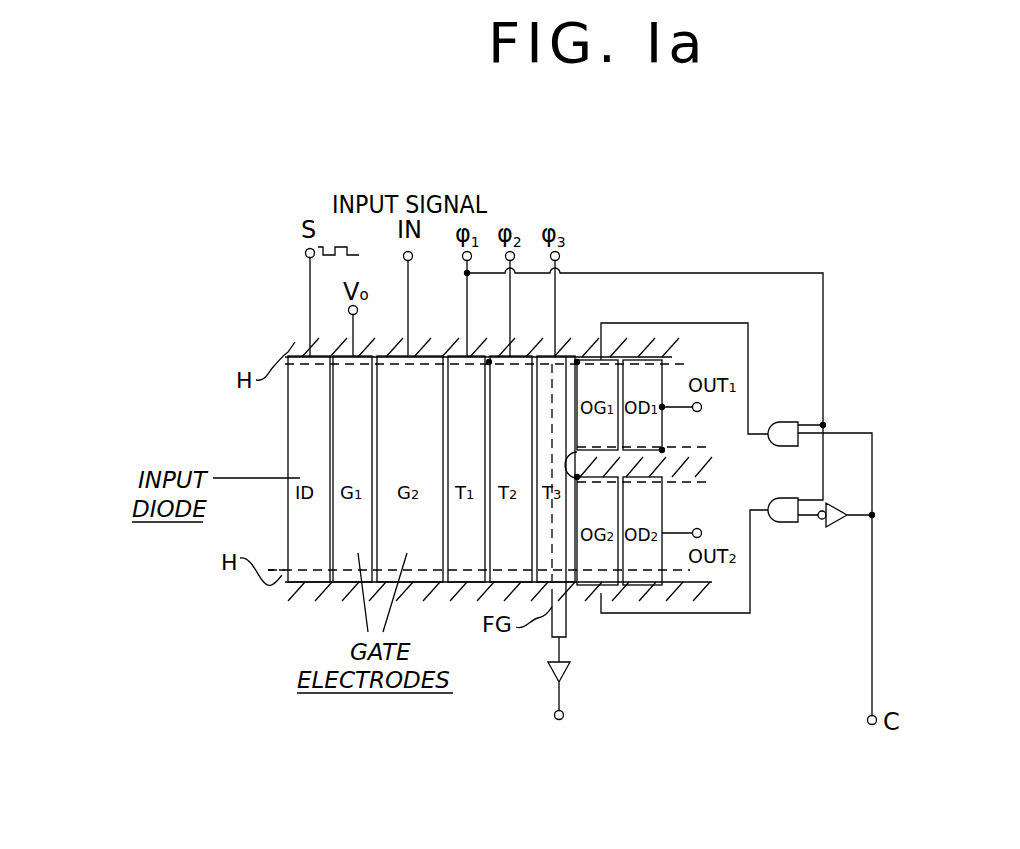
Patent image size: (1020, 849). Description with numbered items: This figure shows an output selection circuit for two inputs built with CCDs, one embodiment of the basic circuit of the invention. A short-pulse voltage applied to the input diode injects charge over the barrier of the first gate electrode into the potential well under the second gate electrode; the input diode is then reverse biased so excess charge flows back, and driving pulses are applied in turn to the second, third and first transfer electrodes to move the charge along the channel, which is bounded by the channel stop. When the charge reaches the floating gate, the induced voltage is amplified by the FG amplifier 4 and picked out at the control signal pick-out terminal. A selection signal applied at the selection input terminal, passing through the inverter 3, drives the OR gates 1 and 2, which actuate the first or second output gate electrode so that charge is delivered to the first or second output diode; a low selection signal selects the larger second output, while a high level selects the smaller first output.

The OR gate 1 is at (790, 422).
The OR gate 2 is at (790, 498).
The inverter 3 is at (835, 503).
The FG amplifier 4 is at (548, 672).